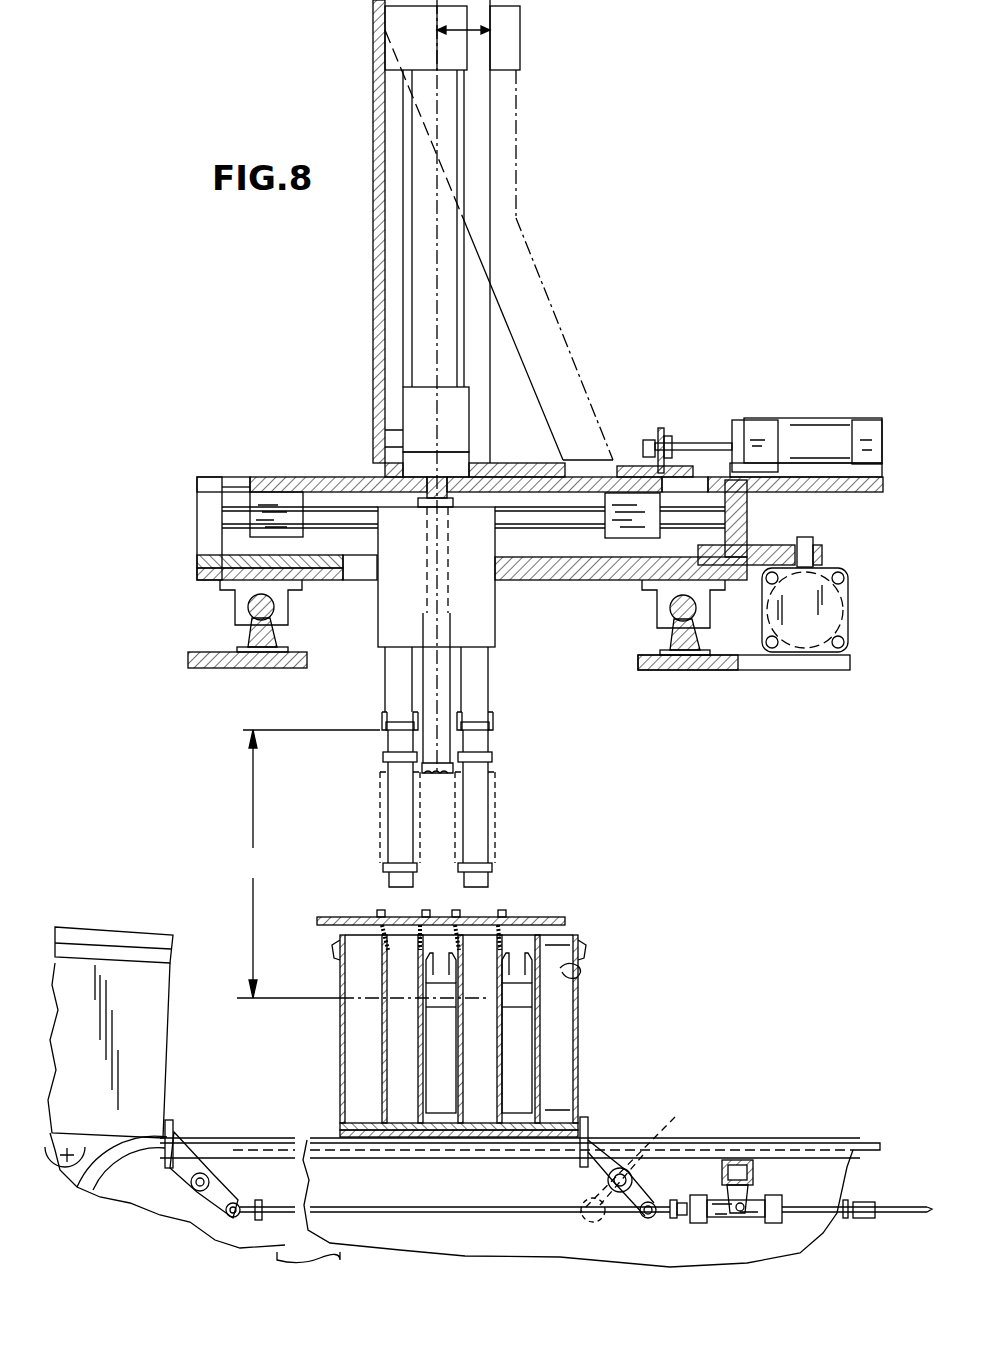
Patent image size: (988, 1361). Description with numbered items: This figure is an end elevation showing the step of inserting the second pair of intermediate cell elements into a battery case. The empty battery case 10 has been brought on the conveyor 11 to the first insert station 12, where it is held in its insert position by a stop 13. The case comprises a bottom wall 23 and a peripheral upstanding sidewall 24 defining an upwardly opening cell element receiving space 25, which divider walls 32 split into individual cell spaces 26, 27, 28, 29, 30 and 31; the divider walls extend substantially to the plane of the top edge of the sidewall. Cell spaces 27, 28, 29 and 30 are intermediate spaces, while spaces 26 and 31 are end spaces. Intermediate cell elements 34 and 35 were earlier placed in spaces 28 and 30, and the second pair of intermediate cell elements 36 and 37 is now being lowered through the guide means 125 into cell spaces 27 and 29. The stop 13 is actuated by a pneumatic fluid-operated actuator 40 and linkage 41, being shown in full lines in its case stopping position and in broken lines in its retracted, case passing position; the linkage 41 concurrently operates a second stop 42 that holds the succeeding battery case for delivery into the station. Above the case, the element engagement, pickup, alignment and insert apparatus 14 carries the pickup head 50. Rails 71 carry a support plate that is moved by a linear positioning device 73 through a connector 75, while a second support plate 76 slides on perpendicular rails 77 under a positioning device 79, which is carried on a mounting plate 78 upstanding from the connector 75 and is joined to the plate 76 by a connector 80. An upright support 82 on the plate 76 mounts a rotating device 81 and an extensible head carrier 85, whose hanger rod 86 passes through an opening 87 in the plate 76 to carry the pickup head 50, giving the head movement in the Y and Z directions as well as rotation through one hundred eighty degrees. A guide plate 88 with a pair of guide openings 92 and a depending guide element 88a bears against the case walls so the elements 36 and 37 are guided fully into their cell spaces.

The battery case 10 is at (586, 1040).
The conveyor 11 is at (232, 1130).
The first insert station 12 is at (465, 1268).
The stop 13 is at (586, 1135).
The element engagement, pickup, alignment and insert apparatus 14 is at (592, 298).
The bottom wall 23 is at (527, 1140).
The peripheral upstanding sidewall 24 is at (578, 1066).
The cell element receiving space 25 is at (582, 974).
The end cell space 26 is at (544, 1085).
The intermediate cell space 27 is at (506, 1085).
The intermediate cell space 28 is at (467, 1098).
The intermediate cell space 29 is at (428, 1098).
The intermediate cell space 30 is at (389, 1078).
The end cell space 31 is at (350, 1095).
The divider walls 32 is at (542, 942).
The intermediate cell element 34 is at (525, 1028).
The intermediate cell element 35 is at (437, 1035).
The intermediate cell element 36 is at (480, 795).
The intermediate cell element 37 is at (397, 795).
The fluid-operated actuator 40 is at (720, 1212).
The linkage 41 is at (445, 1207).
The second stop 42 is at (172, 1132).
The pickup head 50 is at (483, 602).
The rails 71 is at (261, 648).
The linear positioning device 73 is at (822, 614).
The connector 75 is at (762, 546).
The second support plate 76 is at (300, 483).
The rails 77 is at (230, 542).
The mounting plate 78 is at (740, 490).
The positioning device 79 is at (830, 440).
The connector 80 is at (660, 432).
The rotating device 81 is at (398, 28).
The upright support 82 is at (375, 292).
The extensible head carrier 85 is at (418, 400).
The hanger rod 86 is at (433, 476).
The opening 87 is at (503, 497).
The guide plate 88 is at (336, 917).
The depending guide element 88a is at (441, 903).
The guide openings 92 is at (412, 913).
The guide means 125 is at (577, 906).
The Y direction Y is at (485, 32).
The Z direction Z is at (362, 864).